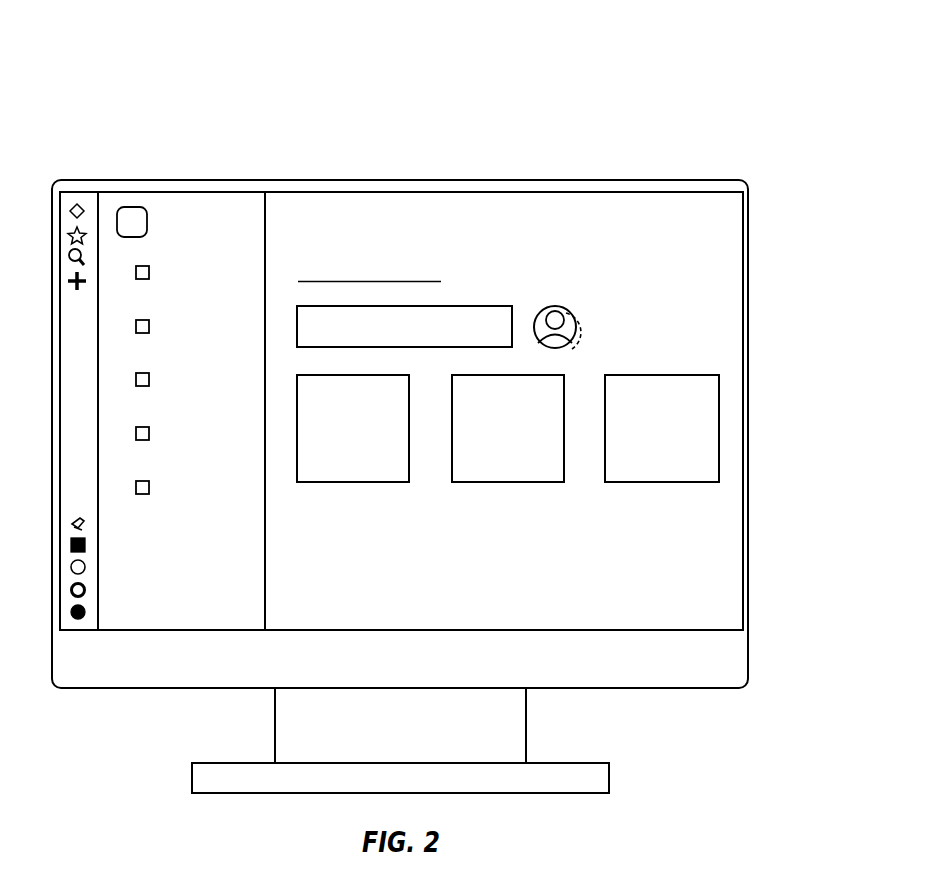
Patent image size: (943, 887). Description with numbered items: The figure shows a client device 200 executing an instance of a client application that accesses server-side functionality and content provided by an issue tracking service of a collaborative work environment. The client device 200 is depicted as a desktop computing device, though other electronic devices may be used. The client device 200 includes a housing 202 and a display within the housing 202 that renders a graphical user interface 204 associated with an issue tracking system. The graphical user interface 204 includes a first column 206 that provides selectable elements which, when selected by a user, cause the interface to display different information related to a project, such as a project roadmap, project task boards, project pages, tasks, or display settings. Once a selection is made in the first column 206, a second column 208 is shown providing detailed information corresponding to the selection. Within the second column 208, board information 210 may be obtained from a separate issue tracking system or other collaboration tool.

The client device 200 is at (63, 57).
The housing 202 is at (749, 218).
The graphical user interface 204 is at (719, 255).
The first column 206 is at (265, 172).
The second column 208 is at (740, 172).
The board information 210 is at (590, 306).